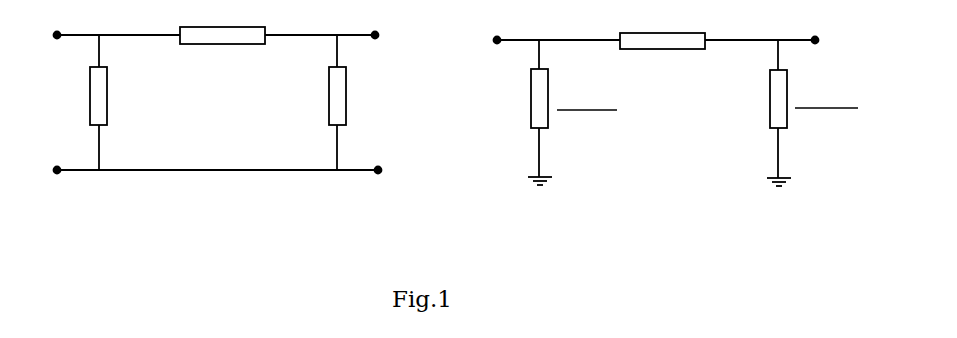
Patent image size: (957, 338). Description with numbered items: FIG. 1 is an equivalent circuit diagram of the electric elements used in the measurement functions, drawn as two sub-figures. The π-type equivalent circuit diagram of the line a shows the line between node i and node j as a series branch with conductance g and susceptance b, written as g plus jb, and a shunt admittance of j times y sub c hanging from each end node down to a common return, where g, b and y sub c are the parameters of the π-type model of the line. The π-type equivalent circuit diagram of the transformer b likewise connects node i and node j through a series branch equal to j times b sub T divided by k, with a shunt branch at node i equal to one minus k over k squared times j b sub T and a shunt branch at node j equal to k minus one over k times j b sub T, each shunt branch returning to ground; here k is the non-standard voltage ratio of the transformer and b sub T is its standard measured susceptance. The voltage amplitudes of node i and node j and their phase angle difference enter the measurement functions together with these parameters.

The π-type equivalent circuit diagram of the line a is at (221, 124).
The π-type equivalent circuit diagram of the transformer b is at (689, 113).